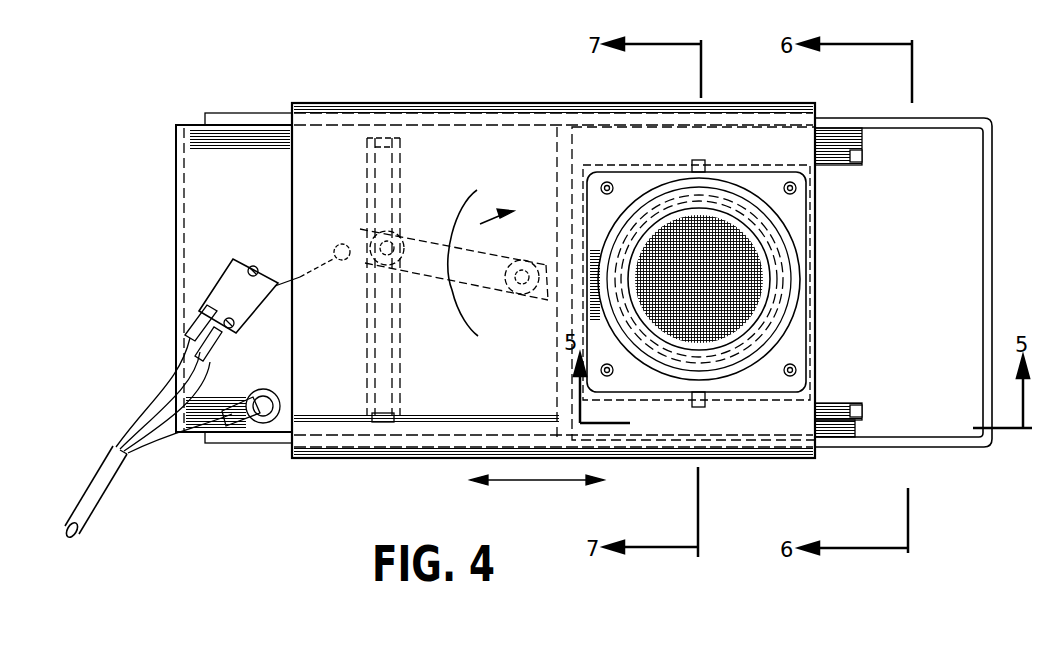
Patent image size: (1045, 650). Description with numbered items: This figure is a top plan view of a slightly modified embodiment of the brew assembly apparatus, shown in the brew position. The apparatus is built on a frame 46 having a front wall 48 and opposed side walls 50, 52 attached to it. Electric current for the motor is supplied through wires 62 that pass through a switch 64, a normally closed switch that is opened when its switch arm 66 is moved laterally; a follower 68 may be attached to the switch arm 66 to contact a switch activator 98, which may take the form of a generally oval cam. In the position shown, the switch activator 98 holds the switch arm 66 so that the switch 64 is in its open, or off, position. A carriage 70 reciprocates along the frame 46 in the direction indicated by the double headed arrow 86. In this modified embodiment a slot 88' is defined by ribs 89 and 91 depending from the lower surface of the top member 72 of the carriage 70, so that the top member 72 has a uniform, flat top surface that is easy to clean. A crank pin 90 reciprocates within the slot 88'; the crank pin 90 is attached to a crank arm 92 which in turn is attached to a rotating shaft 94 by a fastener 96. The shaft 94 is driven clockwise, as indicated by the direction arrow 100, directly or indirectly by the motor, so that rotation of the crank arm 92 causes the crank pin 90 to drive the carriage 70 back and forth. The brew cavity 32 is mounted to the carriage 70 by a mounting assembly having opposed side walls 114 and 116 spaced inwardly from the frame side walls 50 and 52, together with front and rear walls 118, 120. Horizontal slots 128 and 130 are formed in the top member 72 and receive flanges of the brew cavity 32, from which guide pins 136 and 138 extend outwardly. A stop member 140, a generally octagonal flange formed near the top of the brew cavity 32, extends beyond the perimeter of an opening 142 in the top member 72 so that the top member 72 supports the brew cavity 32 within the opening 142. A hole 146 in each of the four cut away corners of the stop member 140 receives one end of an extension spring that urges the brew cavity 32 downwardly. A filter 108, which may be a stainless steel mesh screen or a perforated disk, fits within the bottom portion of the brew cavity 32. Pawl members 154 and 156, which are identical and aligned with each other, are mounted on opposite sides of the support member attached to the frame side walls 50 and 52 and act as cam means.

The brew cavity 32 is at (800, 249).
The frame 46 is at (995, 117).
The front wall 48 is at (992, 238).
The side wall 50 is at (918, 118).
The side wall 52 is at (925, 448).
The wires 62 is at (110, 484).
The switch 64 is at (250, 309).
The switch arm 66 is at (268, 315).
The follower 68 is at (342, 265).
The carriage 70 is at (288, 232).
The top member 72 is at (483, 159).
The double headed arrow 86 is at (549, 482).
The slot 88' is at (405, 280).
The rib 89 is at (365, 345).
The crank pin 90 is at (392, 240).
The rib 91 is at (400, 335).
The crank arm 92 is at (428, 275).
The rotating shaft 94 is at (499, 307).
The fastener 96 is at (510, 262).
The switch activator 98 is at (352, 240).
The direction arrow 100 is at (481, 252).
The filter 108 is at (765, 272).
The side wall 114 is at (618, 172).
The side wall 116 is at (614, 386).
The front wall 118 is at (808, 321).
The rear wall 120 is at (560, 310).
The horizontal slot 128 is at (695, 162).
The horizontal slot 130 is at (693, 407).
The guide pin 136 is at (712, 126).
The guide pin 138 is at (706, 410).
The stop member 140 is at (806, 228).
The opening 142 is at (806, 190).
The hole 146 is at (605, 183).
The pawl member 154 is at (862, 152).
The pawl member 156 is at (855, 410).